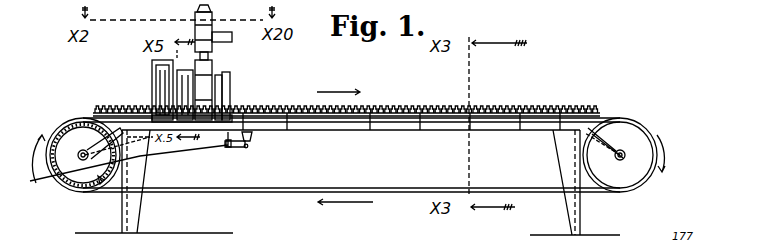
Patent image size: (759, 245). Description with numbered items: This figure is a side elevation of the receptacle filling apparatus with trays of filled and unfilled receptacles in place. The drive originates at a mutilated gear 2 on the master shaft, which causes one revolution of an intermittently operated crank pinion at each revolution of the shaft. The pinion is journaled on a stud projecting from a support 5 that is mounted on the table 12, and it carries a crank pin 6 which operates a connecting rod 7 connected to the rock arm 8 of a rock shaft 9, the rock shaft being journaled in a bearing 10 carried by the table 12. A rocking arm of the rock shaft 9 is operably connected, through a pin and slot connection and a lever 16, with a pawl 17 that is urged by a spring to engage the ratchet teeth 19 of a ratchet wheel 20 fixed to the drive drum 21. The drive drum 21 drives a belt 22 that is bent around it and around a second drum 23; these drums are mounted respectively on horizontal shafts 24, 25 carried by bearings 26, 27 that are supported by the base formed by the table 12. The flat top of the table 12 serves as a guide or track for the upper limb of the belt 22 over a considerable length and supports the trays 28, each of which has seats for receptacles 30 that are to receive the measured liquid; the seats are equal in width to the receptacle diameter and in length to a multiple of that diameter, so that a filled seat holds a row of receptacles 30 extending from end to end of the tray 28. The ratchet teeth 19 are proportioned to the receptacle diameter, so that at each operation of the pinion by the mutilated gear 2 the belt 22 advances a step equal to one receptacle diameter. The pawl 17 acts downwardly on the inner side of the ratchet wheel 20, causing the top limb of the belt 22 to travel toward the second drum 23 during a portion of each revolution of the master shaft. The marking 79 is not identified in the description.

The mutilated gear 2 is at (216, 72).
The support 5 is at (210, 98).
The crank pin 6 is at (223, 78).
The connecting rod 7 is at (225, 85).
The rock arm 8 is at (229, 148).
The rock shaft 9 is at (248, 148).
The bearing 10 is at (253, 140).
The table 12 is at (436, 131).
The lever 16 is at (196, 149).
The pawl 17 is at (154, 181).
The ratchet teeth 19 is at (99, 178).
The ratchet wheel 20 is at (101, 184).
The drive drum 21 is at (72, 172).
The belt 22 is at (356, 123).
The second drum 23 is at (645, 172).
The horizontal shaft 24 is at (40, 178).
The horizontal shaft 25 is at (627, 153).
The bearing 26 is at (98, 143).
The bearing 27 is at (607, 143).
The tray 28 is at (92, 112).
The receptacle 30 is at (110, 105).
The nozzle 79 is at (208, 14).